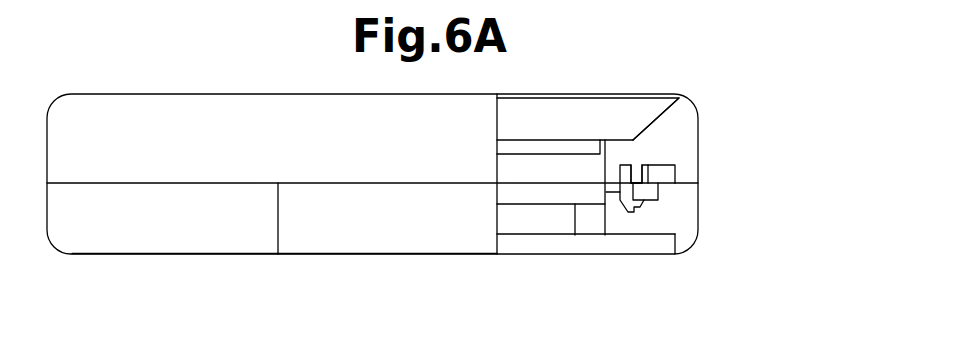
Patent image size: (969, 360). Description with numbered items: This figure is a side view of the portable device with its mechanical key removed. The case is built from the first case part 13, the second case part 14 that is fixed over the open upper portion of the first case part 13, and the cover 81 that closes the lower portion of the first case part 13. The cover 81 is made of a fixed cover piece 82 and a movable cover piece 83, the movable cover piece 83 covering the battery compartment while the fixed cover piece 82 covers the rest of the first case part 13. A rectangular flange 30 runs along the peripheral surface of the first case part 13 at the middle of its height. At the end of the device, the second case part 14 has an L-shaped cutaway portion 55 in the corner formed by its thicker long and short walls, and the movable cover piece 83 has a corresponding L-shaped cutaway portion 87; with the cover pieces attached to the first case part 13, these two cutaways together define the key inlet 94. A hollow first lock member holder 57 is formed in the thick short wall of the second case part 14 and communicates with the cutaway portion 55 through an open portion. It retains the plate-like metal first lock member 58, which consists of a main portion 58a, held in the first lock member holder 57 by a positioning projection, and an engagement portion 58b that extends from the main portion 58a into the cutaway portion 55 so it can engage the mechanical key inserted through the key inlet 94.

The second case part 14 is at (170, 103).
The first case part 13 is at (518, 223).
The flange 30 is at (563, 195).
The first lock member holder 57 is at (636, 172).
The L-shaped cutaway portion 55 is at (684, 158).
The L-shaped cutaway portion 87 is at (713, 218).
The key inlet 94 is at (717, 176).
The first lock member 58 is at (648, 252).
The main portion 58a is at (630, 203).
The engagement portion 58b is at (664, 172).
The cover 81 is at (361, 261).
The fixed cover piece 82 is at (250, 245).
The movable cover piece 83 is at (387, 271).